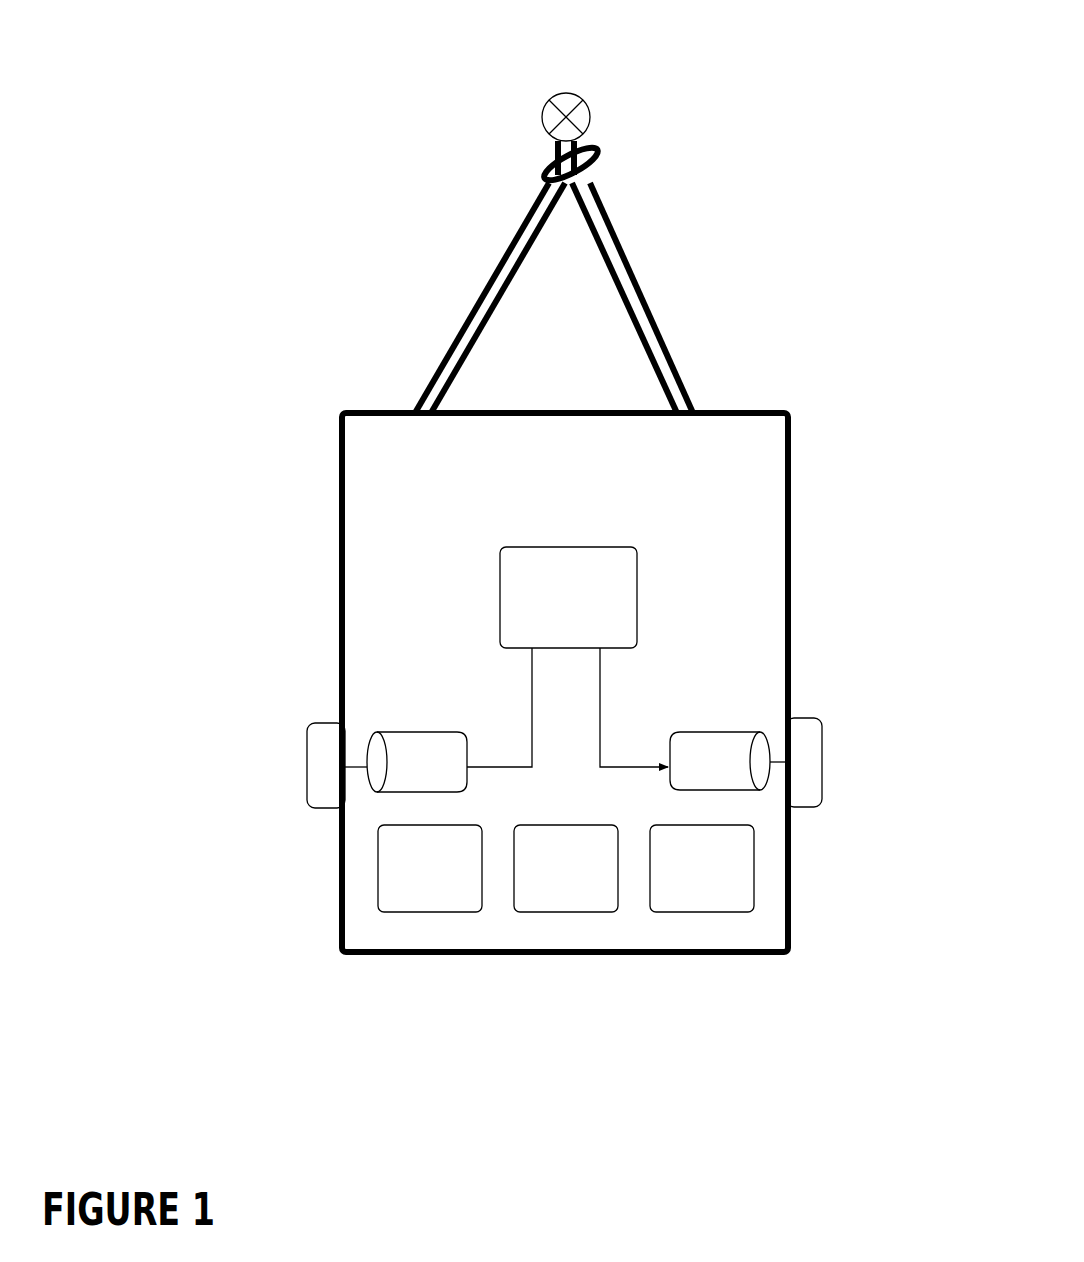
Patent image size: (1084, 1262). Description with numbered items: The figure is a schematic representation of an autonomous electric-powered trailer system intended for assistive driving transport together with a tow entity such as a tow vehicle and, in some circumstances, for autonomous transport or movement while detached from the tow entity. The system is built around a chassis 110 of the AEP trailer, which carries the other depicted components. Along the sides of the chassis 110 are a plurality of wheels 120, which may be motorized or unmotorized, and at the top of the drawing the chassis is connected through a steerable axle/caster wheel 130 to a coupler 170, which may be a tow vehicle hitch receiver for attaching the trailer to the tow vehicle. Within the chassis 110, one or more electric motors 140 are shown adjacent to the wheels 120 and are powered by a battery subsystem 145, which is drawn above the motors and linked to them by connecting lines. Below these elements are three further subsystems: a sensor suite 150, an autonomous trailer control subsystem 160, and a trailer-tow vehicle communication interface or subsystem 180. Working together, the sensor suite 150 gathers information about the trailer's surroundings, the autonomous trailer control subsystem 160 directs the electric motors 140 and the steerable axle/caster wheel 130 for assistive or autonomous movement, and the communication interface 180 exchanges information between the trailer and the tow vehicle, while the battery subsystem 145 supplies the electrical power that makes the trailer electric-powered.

The chassis 110 is at (858, 337).
The wheels 120 is at (853, 703).
The steerable axle/caster wheel 130 is at (673, 84).
The electric motor 140 is at (697, 767).
The battery subsystem 145 is at (555, 606).
The sensor suite 150 is at (415, 874).
The autonomous trailer control subsystem 160 is at (551, 874).
The coupler 170 is at (516, 50).
The trailer-tow vehicle communication interface or subsystem 180 is at (687, 874).